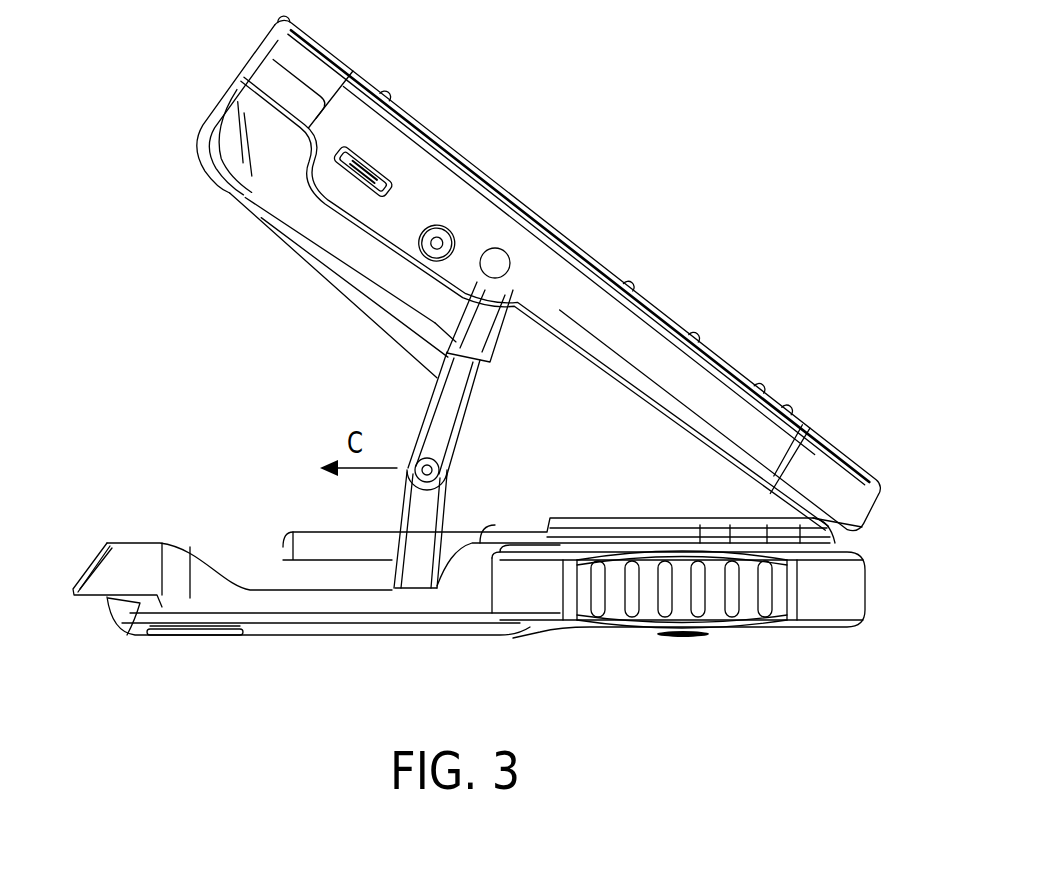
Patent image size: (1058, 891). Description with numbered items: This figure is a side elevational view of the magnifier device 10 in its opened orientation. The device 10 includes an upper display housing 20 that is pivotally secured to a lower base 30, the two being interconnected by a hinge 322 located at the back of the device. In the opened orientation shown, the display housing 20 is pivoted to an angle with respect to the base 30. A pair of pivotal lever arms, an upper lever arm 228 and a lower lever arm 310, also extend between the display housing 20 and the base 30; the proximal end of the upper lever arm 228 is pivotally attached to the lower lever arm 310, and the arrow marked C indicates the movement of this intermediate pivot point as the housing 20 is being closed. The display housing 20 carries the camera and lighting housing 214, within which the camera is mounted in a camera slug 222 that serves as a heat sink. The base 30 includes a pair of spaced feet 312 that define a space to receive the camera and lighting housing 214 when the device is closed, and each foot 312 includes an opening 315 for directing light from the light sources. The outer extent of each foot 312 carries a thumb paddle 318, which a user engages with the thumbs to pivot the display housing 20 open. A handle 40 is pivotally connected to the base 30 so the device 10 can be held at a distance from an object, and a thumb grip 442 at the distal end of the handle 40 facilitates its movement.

The magnifier device 10 is at (555, 148).
The display housing 20 is at (262, 66).
The base 30 is at (118, 611).
The handle 40 is at (856, 592).
The camera and lighting housing 214 is at (302, 242).
The camera slug 222 is at (240, 209).
The upper lever arm 228 is at (468, 392).
The lower lever arm 310 is at (440, 511).
The opposing feet of base 312 is at (310, 632).
The openings in feet for lights 315 is at (172, 640).
The thumb paddles 318 is at (90, 580).
The hinge for display housing 322 is at (835, 538).
The thumb grip 442 is at (735, 595).